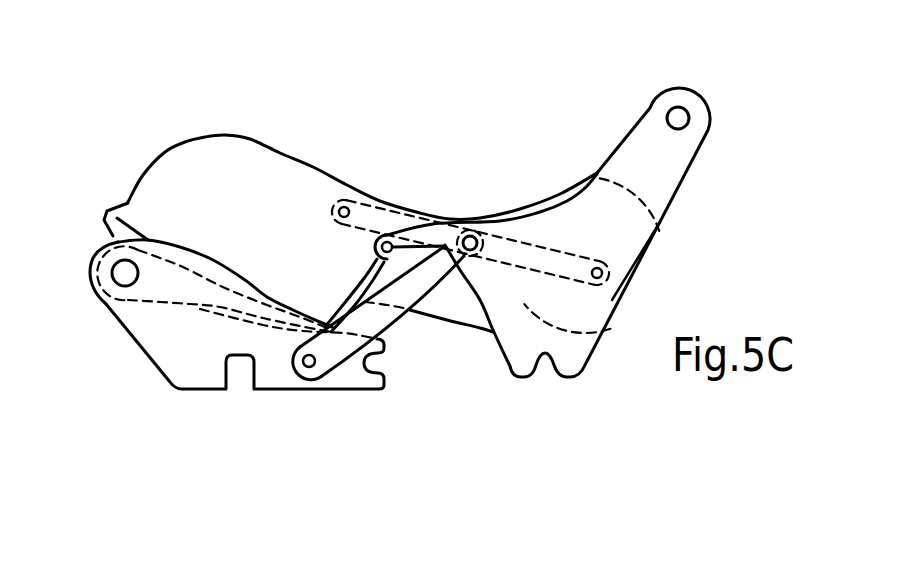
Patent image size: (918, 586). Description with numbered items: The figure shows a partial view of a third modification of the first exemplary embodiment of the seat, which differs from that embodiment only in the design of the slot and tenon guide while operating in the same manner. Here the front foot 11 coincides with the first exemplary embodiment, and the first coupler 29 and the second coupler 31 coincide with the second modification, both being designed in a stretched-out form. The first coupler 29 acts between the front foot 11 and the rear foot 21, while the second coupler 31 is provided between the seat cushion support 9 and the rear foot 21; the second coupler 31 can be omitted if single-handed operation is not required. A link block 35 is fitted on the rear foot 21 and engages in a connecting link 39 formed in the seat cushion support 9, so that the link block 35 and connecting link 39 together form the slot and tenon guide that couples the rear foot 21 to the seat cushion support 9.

The seat cushion support 9 is at (213, 187).
The front foot 11 is at (190, 337).
The rear foot 21 is at (653, 178).
The first coupler 29 is at (373, 315).
The second coupler 31 is at (378, 222).
The link block 35 is at (410, 240).
The connecting link 39 is at (337, 290).